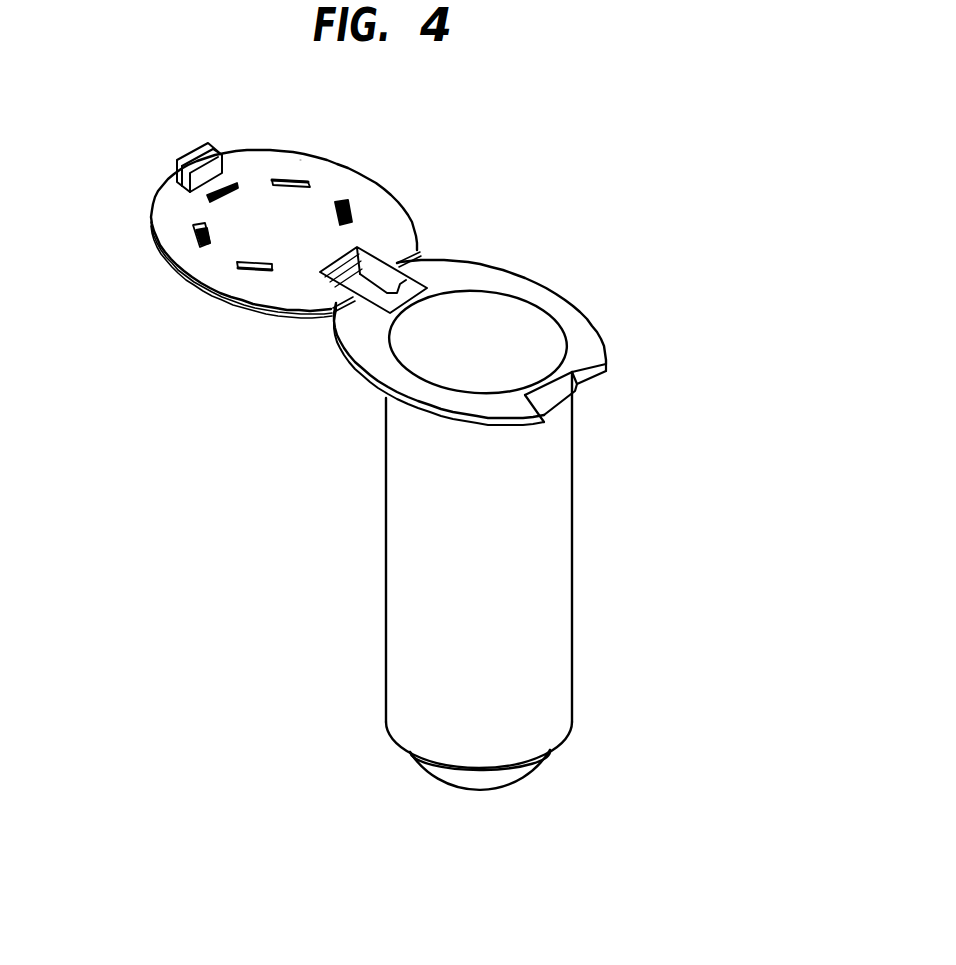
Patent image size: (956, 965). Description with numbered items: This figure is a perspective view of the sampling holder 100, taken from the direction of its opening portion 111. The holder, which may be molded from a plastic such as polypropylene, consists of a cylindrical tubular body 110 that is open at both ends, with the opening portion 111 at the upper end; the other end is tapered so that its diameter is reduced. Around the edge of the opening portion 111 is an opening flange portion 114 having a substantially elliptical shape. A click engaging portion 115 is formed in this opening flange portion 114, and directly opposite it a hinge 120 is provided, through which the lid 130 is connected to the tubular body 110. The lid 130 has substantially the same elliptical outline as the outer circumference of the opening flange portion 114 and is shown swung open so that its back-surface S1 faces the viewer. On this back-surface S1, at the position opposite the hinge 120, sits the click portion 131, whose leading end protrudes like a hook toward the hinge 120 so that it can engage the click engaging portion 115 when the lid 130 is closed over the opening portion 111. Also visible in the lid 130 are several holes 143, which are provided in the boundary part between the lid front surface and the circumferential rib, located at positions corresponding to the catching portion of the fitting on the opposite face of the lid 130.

The sampling holder 100 is at (712, 172).
The tubular body 110 is at (570, 582).
The opening portion 111 is at (527, 316).
The opening flange portion 114 is at (467, 273).
The click engaging portion 115 is at (555, 390).
The hinge 120 is at (327, 325).
The lid 130 is at (211, 293).
The click portion 131 is at (177, 172).
The holes 143 is at (232, 170).
The back-surface of the lid S1 is at (382, 227).